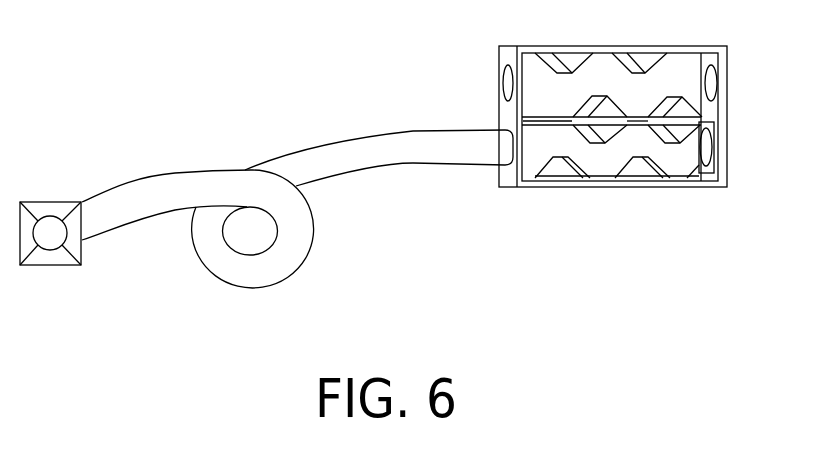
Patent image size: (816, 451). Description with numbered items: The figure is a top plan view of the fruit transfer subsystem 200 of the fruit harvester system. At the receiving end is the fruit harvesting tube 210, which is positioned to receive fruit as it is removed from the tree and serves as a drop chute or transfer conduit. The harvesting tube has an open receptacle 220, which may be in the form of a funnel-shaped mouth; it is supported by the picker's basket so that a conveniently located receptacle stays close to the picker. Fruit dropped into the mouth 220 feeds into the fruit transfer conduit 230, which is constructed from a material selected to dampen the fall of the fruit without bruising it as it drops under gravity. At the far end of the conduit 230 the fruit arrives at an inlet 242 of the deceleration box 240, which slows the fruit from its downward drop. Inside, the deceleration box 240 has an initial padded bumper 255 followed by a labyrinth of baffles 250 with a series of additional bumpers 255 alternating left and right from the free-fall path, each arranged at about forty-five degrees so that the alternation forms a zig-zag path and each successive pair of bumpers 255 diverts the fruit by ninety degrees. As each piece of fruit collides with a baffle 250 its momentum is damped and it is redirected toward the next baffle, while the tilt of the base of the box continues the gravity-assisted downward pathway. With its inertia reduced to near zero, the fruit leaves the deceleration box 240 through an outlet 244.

The fruit transfer subsystem 200 is at (428, 256).
The fruit harvesting tube 210 is at (192, 283).
The open receptacle 220 is at (35, 202).
The fruit transfer conduit 230 is at (282, 150).
The deceleration box 240 is at (593, 50).
The inlet 242 is at (510, 70).
The outlet 244 is at (712, 152).
The baffles 250 is at (675, 157).
The bumpers 255 is at (550, 173).